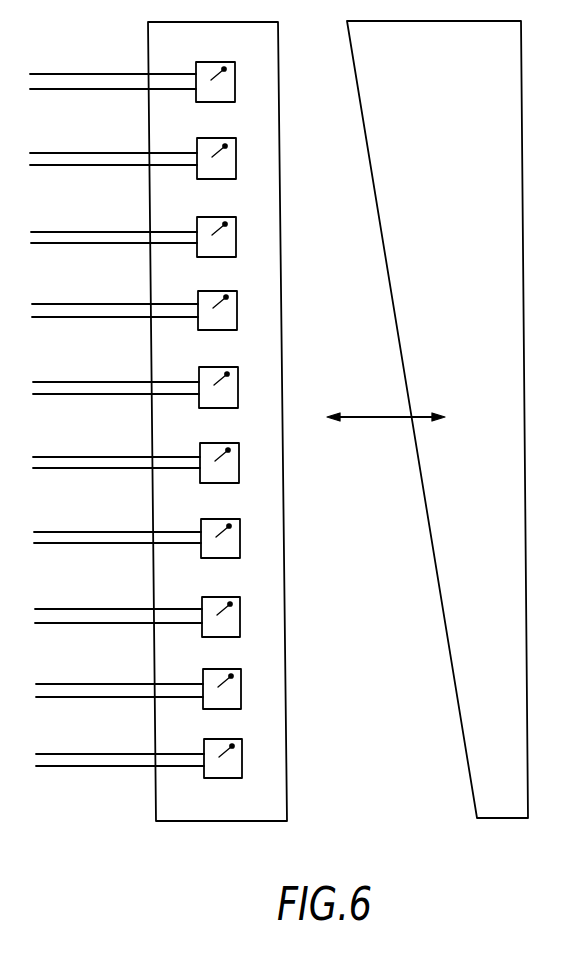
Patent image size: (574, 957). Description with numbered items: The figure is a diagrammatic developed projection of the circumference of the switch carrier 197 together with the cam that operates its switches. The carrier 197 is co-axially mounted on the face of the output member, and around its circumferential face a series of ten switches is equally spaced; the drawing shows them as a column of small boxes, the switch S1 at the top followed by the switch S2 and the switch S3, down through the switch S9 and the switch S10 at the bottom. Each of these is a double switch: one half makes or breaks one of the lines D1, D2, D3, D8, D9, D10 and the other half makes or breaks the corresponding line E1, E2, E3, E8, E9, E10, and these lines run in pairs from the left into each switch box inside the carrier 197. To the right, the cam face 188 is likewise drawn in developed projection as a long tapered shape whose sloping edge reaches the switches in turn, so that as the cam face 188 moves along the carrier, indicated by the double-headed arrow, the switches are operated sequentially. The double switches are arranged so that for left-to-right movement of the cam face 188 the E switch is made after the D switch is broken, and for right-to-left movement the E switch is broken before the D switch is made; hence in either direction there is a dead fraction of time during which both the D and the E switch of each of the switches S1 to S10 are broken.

The cam face 188 is at (392, 303).
The switch carrier 197 is at (187, 797).
The line D1 is at (89, 73).
The line E1 is at (43, 90).
The switch S1 is at (235, 87).
The line D2 is at (105, 152).
The line E2 is at (44, 166).
The switch S2 is at (236, 160).
The line D3 is at (106, 230).
The line E3 is at (48, 244).
The switch S3 is at (237, 232).
The line D8 is at (115, 602).
The line E8 is at (54, 624).
The line D9 is at (115, 683).
The line E9 is at (65, 698).
The switch S9 is at (241, 690).
The line D10 is at (119, 752).
The line E10 is at (67, 768).
The switch S10 is at (242, 765).